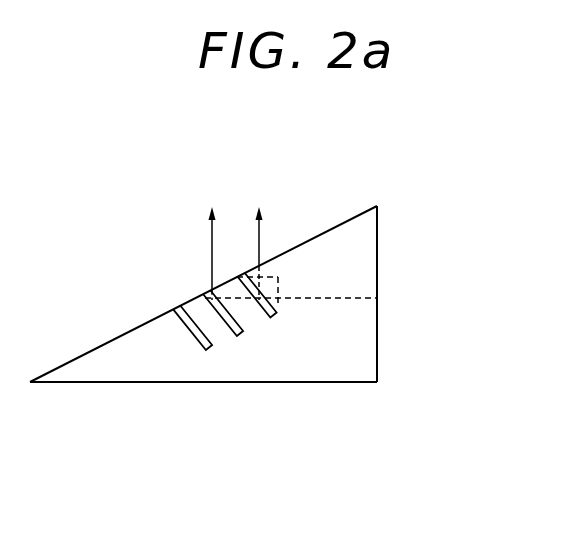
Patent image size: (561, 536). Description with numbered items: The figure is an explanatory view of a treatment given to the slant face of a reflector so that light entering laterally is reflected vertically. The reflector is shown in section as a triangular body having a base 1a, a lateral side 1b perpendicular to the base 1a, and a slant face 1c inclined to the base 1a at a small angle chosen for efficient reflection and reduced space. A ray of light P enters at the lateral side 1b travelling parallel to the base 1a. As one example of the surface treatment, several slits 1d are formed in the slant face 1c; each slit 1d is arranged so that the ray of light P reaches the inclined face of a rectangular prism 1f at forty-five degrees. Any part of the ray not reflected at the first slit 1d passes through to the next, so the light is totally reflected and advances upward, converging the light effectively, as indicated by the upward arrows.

The base 1a is at (288, 383).
The lateral side 1b is at (378, 365).
The slant face 1c is at (332, 228).
The slit 1d is at (270, 318).
The rectangular prism 1f is at (278, 278).
The ray of light P is at (390, 298).